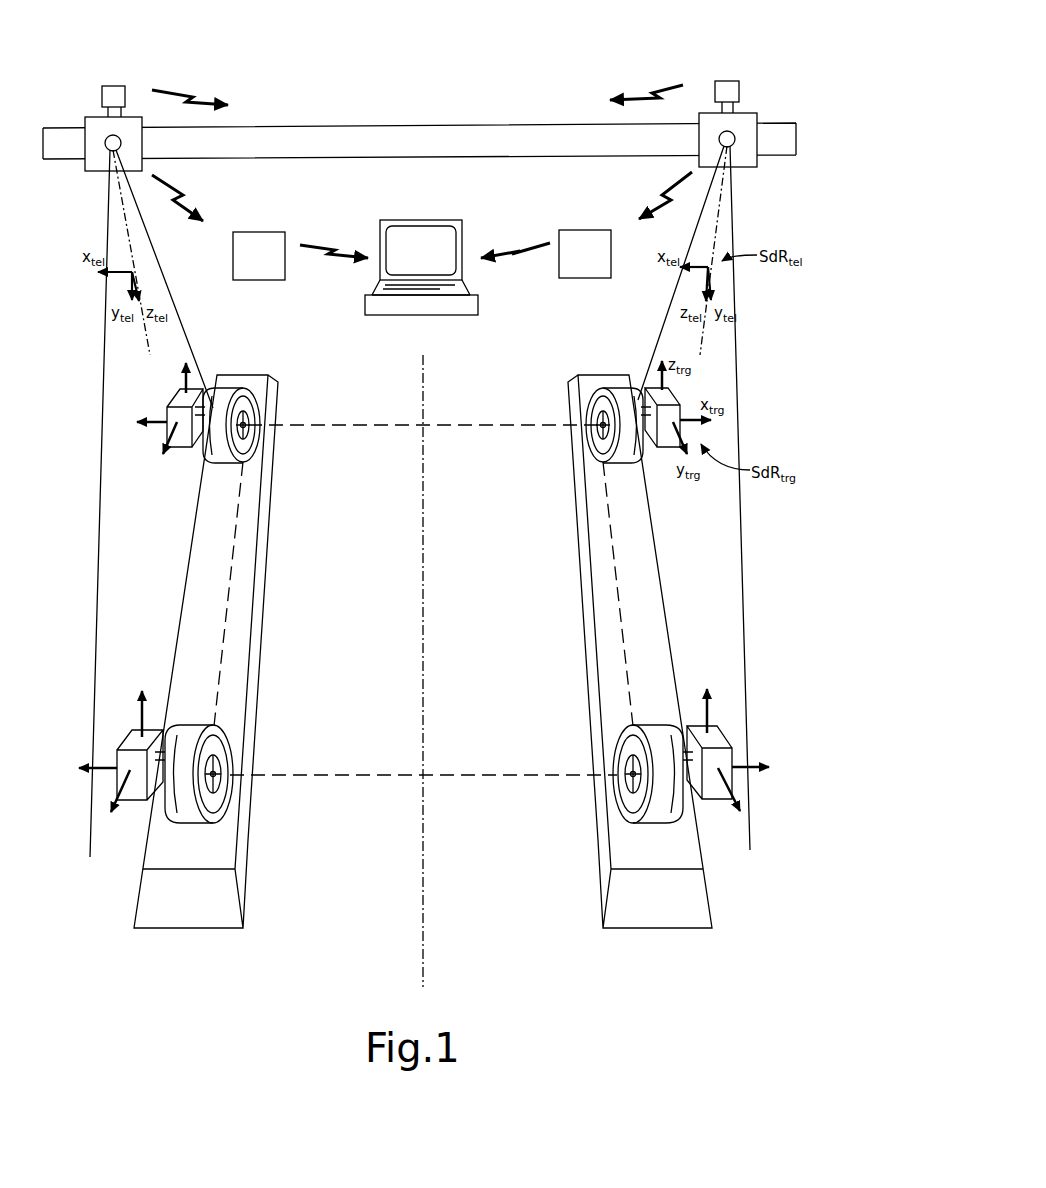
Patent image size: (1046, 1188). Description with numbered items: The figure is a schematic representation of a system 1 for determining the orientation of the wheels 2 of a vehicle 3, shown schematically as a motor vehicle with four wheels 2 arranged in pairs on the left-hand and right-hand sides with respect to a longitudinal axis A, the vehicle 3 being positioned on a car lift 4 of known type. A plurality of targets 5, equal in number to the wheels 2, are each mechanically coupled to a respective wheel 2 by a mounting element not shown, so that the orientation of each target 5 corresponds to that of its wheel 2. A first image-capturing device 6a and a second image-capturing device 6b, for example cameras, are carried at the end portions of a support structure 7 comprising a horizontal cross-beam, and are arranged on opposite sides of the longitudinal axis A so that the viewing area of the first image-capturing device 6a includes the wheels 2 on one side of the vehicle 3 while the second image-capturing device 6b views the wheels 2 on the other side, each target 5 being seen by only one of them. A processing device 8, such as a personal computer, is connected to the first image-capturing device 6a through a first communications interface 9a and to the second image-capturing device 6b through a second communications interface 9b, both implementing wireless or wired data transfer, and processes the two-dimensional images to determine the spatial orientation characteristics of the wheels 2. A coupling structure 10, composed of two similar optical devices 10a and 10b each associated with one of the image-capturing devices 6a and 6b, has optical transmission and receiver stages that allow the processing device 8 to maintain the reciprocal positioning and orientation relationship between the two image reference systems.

The system 1 is at (442, 98).
The wheels 2 is at (207, 448).
The vehicle 3 is at (370, 755).
The car lift 4 is at (671, 917).
The targets 5 is at (175, 403).
The first image-capturing device 6a is at (93, 168).
The second image-capturing device 6b is at (738, 163).
The support structure 7 is at (371, 135).
The processing device 8 is at (466, 303).
The first communications interface 9a is at (243, 247).
The second communications interface 9b is at (568, 238).
The coupling structure 10 is at (128, 73).
The optical device 10a is at (108, 90).
The optical device 10b is at (728, 90).
The longitudinal axis A is at (424, 910).